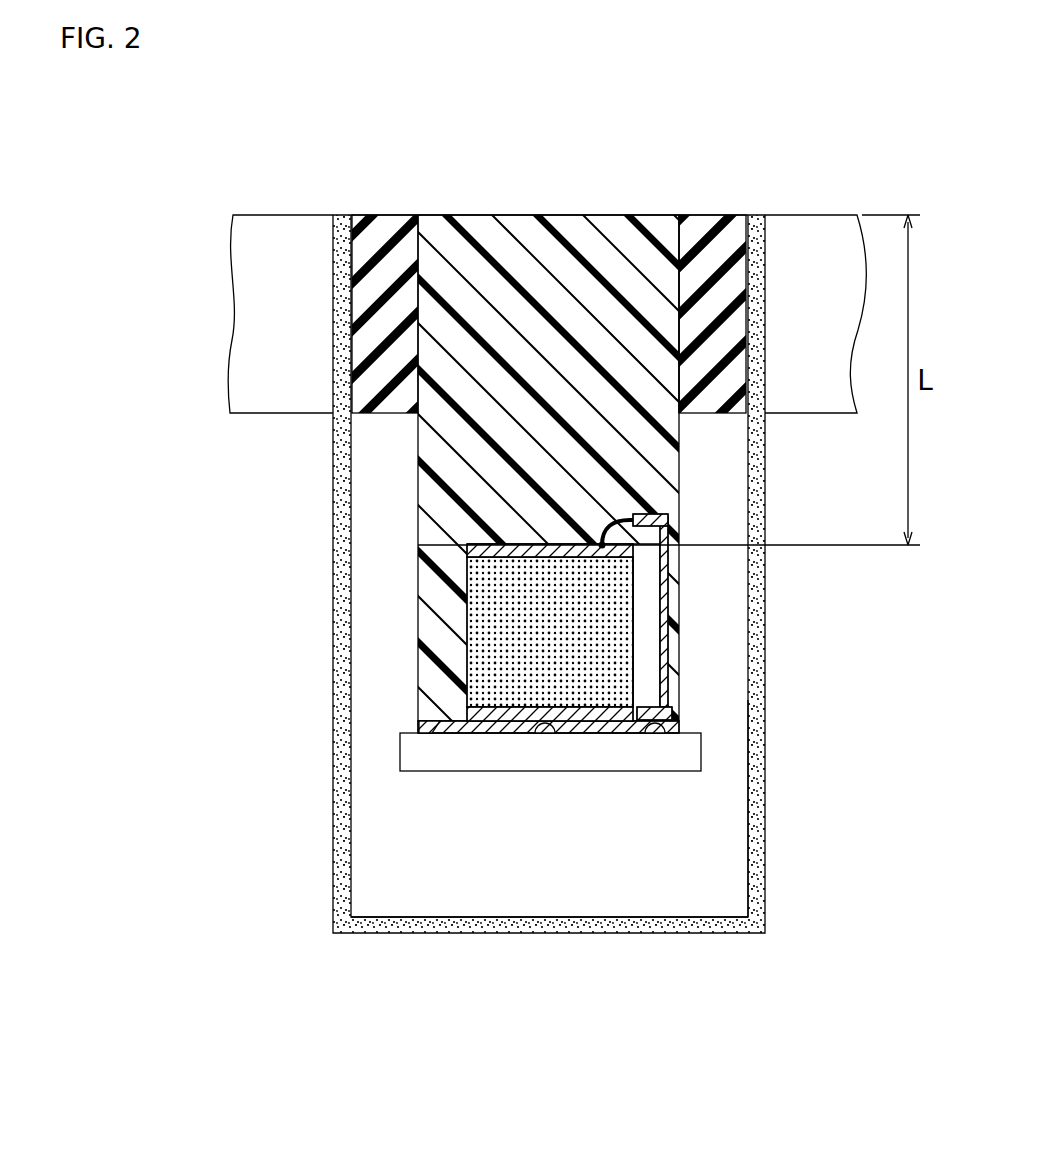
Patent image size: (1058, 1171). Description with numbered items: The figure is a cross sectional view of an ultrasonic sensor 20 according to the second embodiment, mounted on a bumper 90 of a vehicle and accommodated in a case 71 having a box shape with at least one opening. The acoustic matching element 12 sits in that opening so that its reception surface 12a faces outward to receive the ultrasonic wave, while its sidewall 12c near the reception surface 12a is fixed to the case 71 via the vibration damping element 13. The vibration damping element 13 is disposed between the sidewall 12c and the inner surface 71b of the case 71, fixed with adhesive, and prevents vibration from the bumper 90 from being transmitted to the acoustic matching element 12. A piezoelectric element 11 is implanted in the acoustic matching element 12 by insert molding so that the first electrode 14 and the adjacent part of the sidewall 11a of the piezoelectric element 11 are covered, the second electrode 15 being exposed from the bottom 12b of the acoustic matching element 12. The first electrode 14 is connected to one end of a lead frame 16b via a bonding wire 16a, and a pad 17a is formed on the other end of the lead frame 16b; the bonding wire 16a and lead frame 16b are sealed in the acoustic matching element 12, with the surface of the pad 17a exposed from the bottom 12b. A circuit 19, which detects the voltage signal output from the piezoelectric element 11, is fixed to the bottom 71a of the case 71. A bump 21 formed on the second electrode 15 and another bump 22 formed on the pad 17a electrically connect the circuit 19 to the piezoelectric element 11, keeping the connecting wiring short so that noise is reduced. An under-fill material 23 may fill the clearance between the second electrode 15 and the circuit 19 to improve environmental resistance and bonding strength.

The ultrasonic sensor 20 is at (834, 184).
The bumper 90 is at (296, 225).
The vibration damping element 13 is at (388, 226).
The acoustic matching element 12 is at (665, 437).
The reception surface 12a is at (571, 215).
The bottom of the acoustic matching element 12b is at (418, 723).
The sidewall of the acoustic matching element 12c is at (680, 250).
The piezoelectric element 11 is at (468, 612).
The sidewall of the piezoelectric element 11a is at (634, 634).
The first electrode 14 is at (418, 548).
The second electrode 15 is at (468, 665).
The bonding wire 16a is at (614, 520).
The lead frame 16b is at (664, 612).
The pad 17a is at (660, 713).
The circuit 19 is at (400, 750).
The bump 21 is at (548, 733).
The bump 22 is at (655, 733).
The under-fill material 23 is at (452, 735).
The case 71 is at (765, 826).
The bottom of the case 71a is at (374, 916).
The inner surface of the case 71b is at (766, 887).